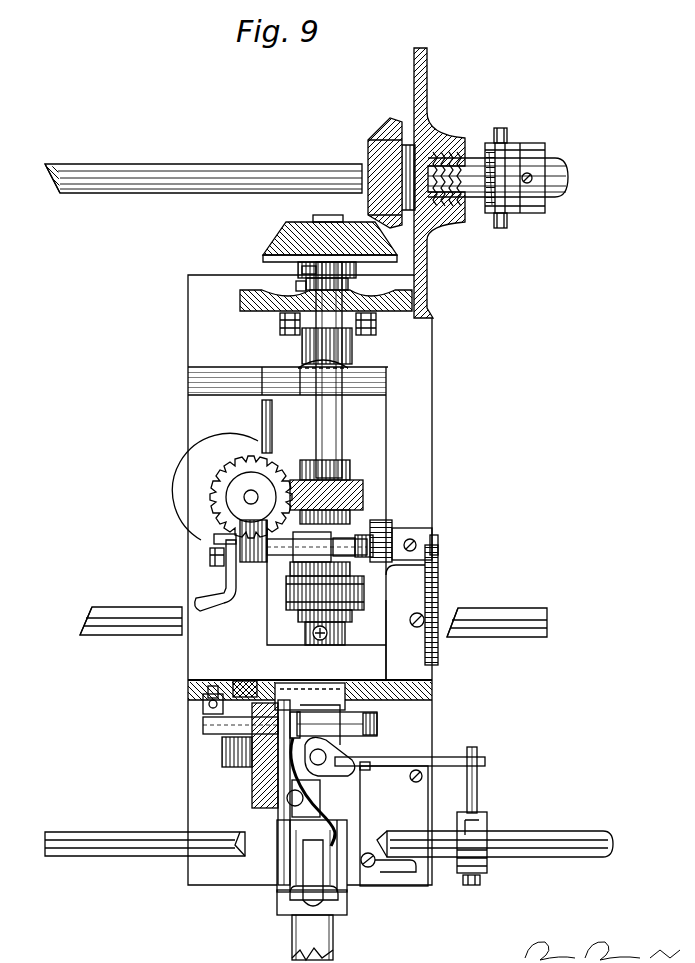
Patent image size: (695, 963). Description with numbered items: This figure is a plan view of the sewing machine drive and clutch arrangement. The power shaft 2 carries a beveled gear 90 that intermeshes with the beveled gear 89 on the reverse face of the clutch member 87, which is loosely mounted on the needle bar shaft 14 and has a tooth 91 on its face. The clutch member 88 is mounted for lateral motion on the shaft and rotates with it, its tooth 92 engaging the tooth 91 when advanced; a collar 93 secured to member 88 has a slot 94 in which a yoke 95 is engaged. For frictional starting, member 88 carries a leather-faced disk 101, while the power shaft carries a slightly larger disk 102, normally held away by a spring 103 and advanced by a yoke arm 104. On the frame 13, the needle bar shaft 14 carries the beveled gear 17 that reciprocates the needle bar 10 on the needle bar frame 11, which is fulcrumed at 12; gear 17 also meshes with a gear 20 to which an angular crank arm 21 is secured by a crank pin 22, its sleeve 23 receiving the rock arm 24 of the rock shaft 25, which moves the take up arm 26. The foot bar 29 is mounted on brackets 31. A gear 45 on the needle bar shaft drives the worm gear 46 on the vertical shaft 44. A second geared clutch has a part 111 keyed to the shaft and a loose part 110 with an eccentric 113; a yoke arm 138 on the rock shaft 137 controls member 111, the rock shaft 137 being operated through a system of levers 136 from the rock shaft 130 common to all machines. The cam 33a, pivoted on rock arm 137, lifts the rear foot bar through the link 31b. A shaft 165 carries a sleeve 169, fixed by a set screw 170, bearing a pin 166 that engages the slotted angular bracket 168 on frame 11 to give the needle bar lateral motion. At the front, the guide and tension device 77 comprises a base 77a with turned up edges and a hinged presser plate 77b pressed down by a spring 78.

The power shaft 2 is at (174, 172).
The beveled gear 90 is at (372, 138).
The disk 102 is at (428, 104).
The spring 103 is at (438, 150).
The yoke arm 104 is at (498, 185).
The beveled gear 89 is at (275, 233).
The clutch member 87 is at (298, 266).
The tooth 91 is at (304, 271).
The tooth 92 is at (296, 286).
The clutch member 88 is at (298, 308).
The slot 94 is at (290, 332).
The yoke 95 is at (374, 324).
The collar 93 is at (362, 336).
The disk 101 is at (417, 313).
The frame 13 is at (388, 394).
The needle bar shaft 14 is at (327, 426).
The gear 45 is at (363, 482).
The worm gear 46 is at (218, 473).
The vertical shaft 44 is at (244, 497).
The clutch member 111 is at (343, 540).
The eccentric 113 is at (366, 607).
The clutch member 110 is at (348, 622).
The rock shaft 137 is at (374, 540).
The yoke arm 138 is at (378, 546).
The system of levers 136 is at (436, 578).
The link 31b is at (208, 557).
The cam 33a is at (213, 592).
The rock shaft 130 is at (120, 610).
The beveled gear 17 is at (390, 700).
The rock arm 24 is at (208, 692).
The crank pin 22 is at (244, 690).
The sleeve 23 is at (207, 703).
The rock shaft 25 is at (240, 724).
The angular crank arm 21 is at (233, 763).
The gear 20 is at (253, 797).
The brackets 31 is at (287, 787).
The fulcrum 12 is at (311, 742).
The frame 11 is at (345, 755).
The needle bar 10 is at (332, 772).
The take up arm 26 is at (323, 806).
The foot bar 29 is at (290, 807).
The angular bracket 168 is at (446, 758).
The pin 166 is at (478, 790).
The sleeve 169 is at (478, 827).
The set screw 170 is at (481, 882).
The shaft 165 is at (100, 836).
The spring 78 is at (347, 887).
The guide and tension device 77 is at (290, 875).
The base 77a is at (347, 905).
The presser plate 77b is at (296, 888).